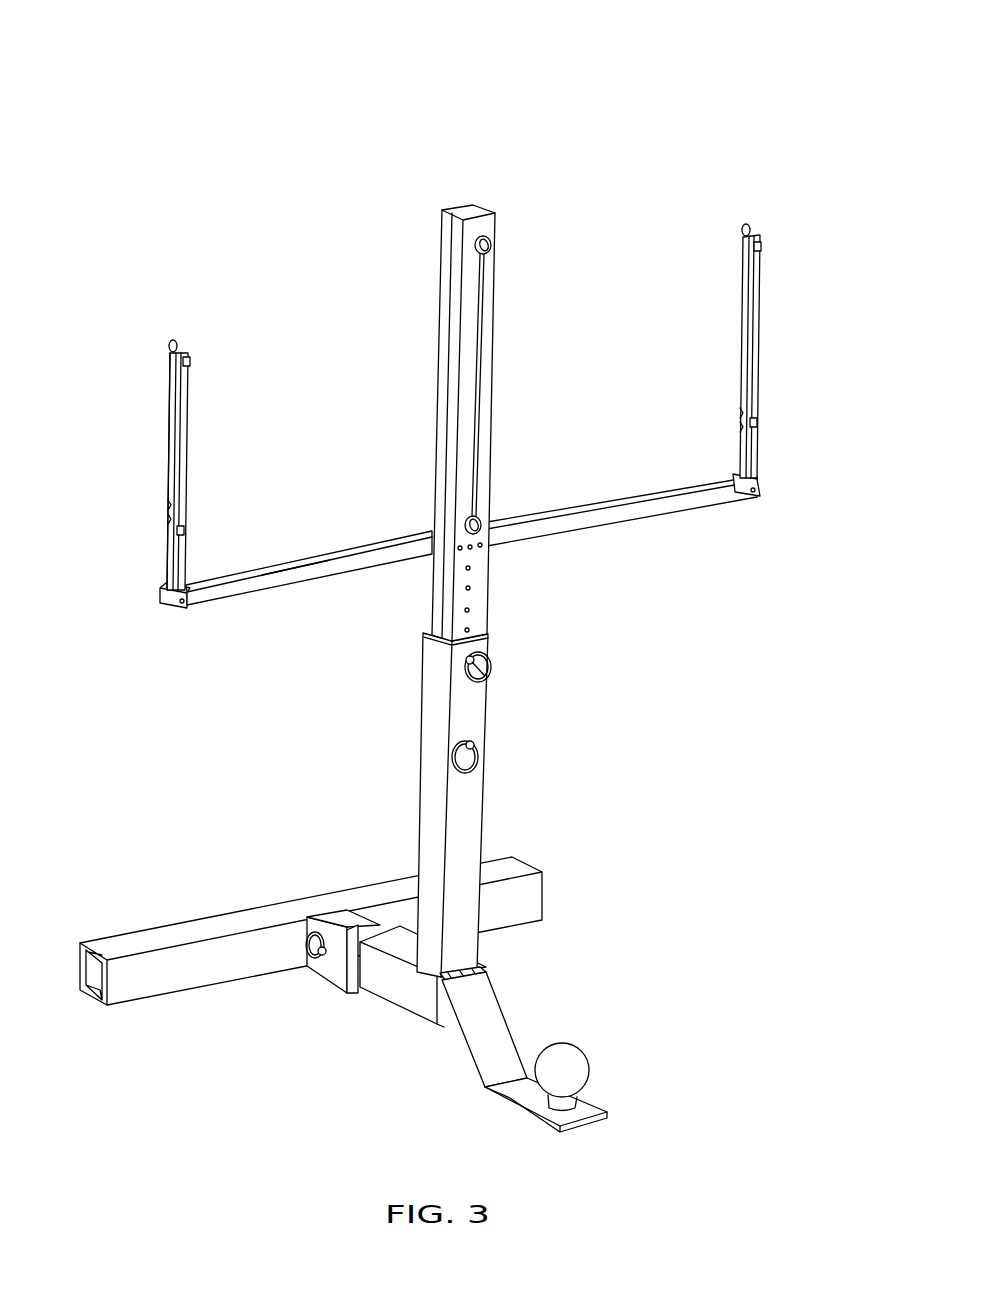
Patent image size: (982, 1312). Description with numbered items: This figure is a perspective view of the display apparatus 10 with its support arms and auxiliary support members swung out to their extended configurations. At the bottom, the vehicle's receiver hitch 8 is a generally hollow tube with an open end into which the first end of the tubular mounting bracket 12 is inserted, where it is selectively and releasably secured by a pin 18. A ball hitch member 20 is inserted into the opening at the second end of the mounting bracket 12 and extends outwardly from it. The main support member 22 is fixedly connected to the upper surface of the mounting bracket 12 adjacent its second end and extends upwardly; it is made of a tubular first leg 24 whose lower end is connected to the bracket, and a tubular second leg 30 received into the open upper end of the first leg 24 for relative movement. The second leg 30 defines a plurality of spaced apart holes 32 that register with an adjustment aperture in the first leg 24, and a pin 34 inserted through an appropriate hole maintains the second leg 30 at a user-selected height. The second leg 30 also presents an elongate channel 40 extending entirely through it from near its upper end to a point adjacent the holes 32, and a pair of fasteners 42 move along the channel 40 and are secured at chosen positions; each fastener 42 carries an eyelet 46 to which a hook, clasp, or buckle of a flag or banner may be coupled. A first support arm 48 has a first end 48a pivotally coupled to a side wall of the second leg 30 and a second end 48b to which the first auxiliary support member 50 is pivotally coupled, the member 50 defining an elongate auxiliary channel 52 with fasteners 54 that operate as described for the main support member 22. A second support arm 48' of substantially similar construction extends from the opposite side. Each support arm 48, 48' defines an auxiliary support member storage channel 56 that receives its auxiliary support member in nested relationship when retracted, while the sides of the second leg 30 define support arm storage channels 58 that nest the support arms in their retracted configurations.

The display apparatus 10 is at (735, 90).
The receiver hitch 8 is at (345, 970).
The mounting bracket 12 is at (385, 1012).
The pin 18 is at (306, 955).
The ball hitch member 20 is at (568, 1030).
The main support member 22 is at (525, 651).
The first leg 24 is at (478, 820).
The second leg 30 is at (490, 388).
The holes 32 is at (472, 587).
The pin 34 is at (490, 672).
The elongate channel 40 is at (480, 333).
The fastener 42 is at (484, 232).
The eyelet 46 is at (492, 243).
The first support arm 48 is at (309, 605).
The second support arm 48' is at (623, 535).
The first end 48a is at (445, 556).
The second end 48b is at (185, 606).
The first auxiliary support member 50 is at (168, 443).
The elongate auxiliary channel 52 is at (188, 440).
The fasteners 54 is at (188, 362).
The auxiliary support member storage channel 56 is at (290, 557).
The support arm storage channel 58 is at (440, 300).